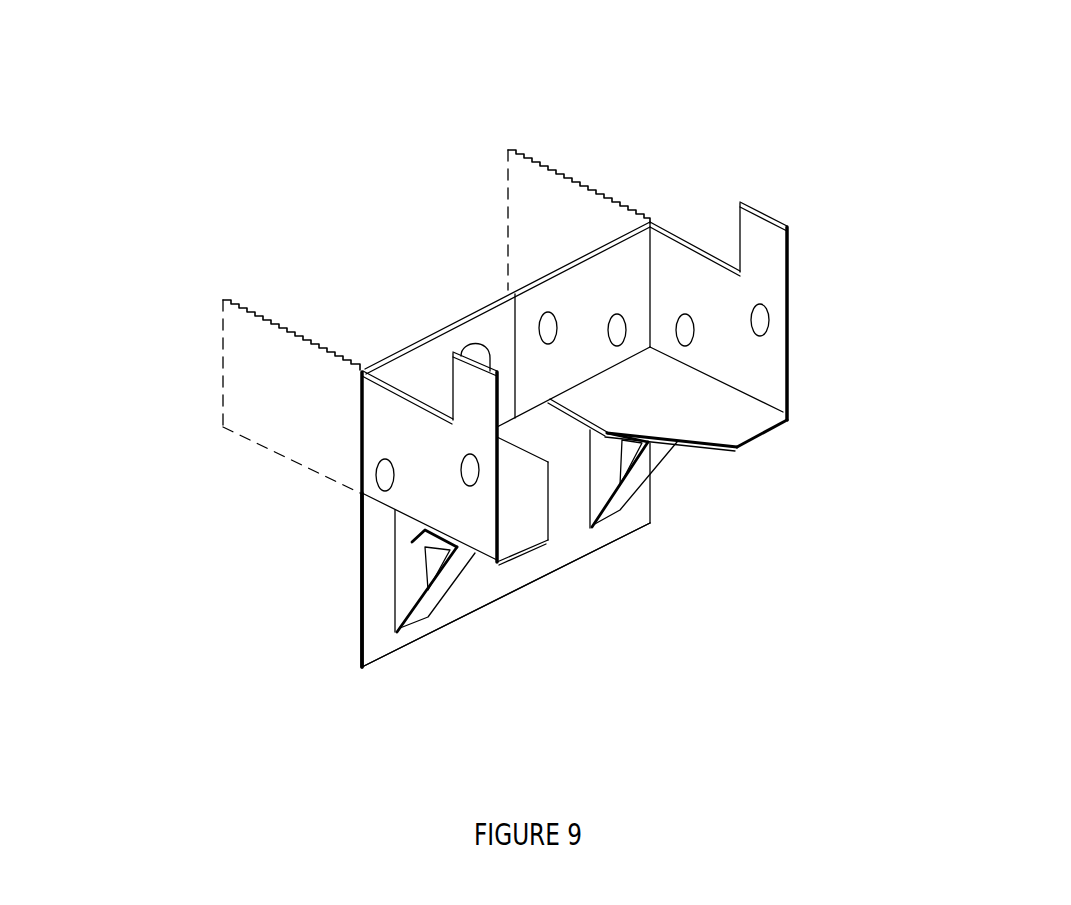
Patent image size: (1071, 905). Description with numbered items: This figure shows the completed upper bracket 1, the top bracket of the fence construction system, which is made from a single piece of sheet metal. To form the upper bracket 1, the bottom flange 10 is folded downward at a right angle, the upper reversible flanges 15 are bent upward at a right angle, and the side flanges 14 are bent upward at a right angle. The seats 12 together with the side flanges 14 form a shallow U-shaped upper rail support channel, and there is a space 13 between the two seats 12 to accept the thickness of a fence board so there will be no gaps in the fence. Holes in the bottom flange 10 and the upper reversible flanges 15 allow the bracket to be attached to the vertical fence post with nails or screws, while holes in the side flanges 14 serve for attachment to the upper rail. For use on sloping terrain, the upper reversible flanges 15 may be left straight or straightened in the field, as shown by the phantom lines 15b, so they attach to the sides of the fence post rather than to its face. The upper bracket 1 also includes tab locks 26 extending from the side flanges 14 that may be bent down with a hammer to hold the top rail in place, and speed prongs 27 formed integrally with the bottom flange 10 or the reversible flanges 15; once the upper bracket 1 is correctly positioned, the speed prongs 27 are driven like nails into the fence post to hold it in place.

The upper bracket 1 is at (834, 139).
The bottom flange 10 is at (425, 645).
The seats 12 is at (762, 437).
The space 13 is at (572, 533).
The side flanges 14 is at (397, 446).
The upper reversible flanges 15 is at (522, 280).
The phantom lines 15b is at (226, 292).
The tab locks 26 is at (447, 370).
The speed prongs 27 is at (410, 582).